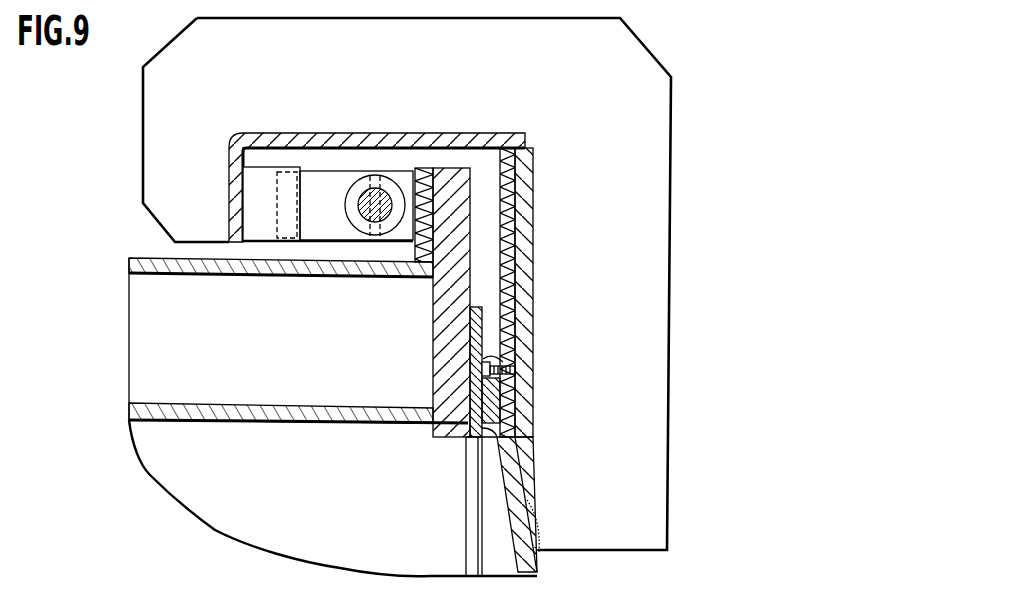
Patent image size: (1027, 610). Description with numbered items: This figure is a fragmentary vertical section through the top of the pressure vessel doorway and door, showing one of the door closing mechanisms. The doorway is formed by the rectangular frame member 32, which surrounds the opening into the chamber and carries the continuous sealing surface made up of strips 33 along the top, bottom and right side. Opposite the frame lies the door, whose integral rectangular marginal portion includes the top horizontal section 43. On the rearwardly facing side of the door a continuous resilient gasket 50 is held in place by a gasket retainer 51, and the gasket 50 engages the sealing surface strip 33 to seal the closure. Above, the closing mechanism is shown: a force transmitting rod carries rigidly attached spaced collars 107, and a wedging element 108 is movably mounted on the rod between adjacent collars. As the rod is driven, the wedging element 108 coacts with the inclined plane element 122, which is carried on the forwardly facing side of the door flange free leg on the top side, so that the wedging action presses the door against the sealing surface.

The inclined plane element 122 is at (274, 170).
The wedging element 108 is at (340, 184).
The collar 107 is at (380, 182).
The top horizontal section 43 is at (510, 236).
The rectangular frame member 32 is at (445, 321).
The gasket retainer 51 is at (473, 346).
The sealing surface strip 33 is at (473, 384).
The resilient gasket 50 is at (487, 434).